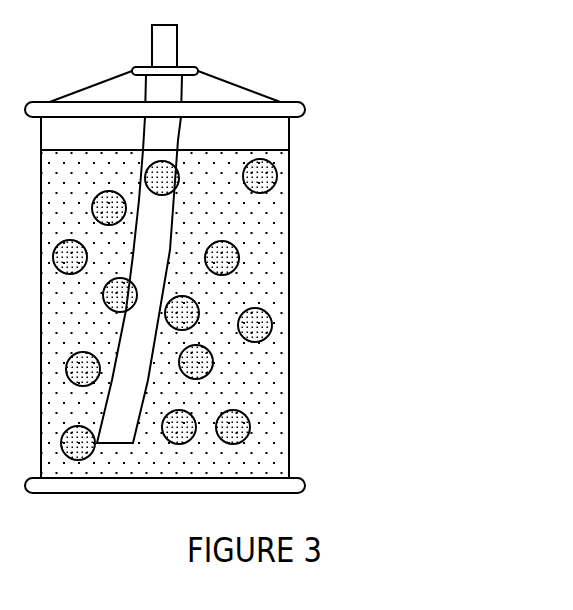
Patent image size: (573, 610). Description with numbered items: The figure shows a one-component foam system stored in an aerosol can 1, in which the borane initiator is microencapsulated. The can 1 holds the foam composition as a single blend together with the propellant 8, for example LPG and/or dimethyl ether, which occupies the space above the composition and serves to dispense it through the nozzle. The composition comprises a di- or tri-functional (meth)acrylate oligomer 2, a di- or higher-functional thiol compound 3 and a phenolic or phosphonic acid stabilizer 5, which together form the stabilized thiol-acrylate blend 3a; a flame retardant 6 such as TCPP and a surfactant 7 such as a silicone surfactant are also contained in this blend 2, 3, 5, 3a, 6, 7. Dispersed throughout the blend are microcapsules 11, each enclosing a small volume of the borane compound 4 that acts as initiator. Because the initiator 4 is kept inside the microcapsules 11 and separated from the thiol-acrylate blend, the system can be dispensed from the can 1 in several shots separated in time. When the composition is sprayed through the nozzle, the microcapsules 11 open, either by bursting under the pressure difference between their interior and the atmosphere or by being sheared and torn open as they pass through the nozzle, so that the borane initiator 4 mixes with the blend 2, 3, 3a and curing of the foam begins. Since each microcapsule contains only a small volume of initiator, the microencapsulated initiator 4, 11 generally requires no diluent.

The aerosol can 1 is at (290, 310).
The di- or tri-functional (meth)acrylate oligomer 2 is at (278, 314).
The di- or higher-functional thiol compound 3 is at (278, 314).
The phenolic or phosphonic acid compound 5 is at (278, 314).
The stabilized thiol-acrylate blend 3a is at (278, 314).
The flame retardant 6 is at (278, 314).
The surfactant 7 is at (268, 395).
The propellant 8 is at (213, 138).
The microcapsules 11 is at (227, 289).
The borane compound 4 is at (127, 213).